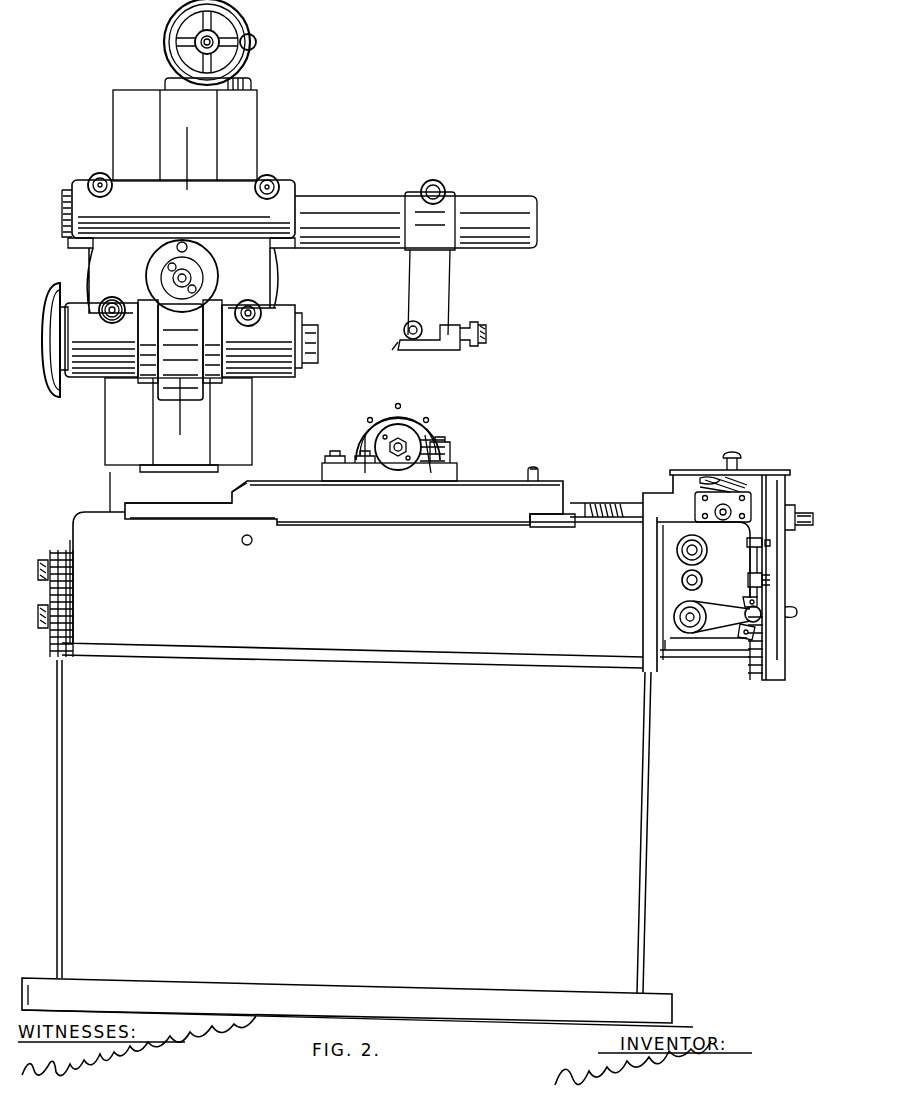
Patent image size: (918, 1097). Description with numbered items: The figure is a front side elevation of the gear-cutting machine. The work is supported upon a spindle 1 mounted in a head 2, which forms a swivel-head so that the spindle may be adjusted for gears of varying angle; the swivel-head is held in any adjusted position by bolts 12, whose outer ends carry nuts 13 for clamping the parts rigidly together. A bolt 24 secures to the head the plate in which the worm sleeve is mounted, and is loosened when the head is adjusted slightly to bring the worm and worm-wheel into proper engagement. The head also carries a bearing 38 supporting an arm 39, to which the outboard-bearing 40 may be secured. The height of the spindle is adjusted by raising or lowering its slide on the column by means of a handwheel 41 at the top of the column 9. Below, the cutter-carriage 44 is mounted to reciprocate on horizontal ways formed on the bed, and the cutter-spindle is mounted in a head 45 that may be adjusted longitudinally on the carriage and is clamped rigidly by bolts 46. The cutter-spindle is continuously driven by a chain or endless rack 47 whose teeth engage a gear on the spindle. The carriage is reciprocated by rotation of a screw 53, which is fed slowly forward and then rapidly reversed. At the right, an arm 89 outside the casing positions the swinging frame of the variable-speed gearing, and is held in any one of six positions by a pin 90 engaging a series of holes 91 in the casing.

The handwheel 41 is at (240, 22).
The column 9 is at (96, 130).
The bearing 38 is at (290, 198).
The arm 39 is at (365, 202).
The outboard-bearing 40 is at (440, 297).
The bolt 24 is at (187, 248).
The head 2 is at (272, 272).
The bolts 12 is at (107, 297).
The nuts 13 is at (119, 298).
The spindle 1 is at (308, 325).
The chain or endless rack 47 is at (438, 395).
The bolts 46 is at (334, 452).
The head 45 is at (460, 475).
The cutter-carriage 44 is at (490, 495).
The screw 53 is at (612, 502).
The arm 89 is at (716, 608).
The pin 90 is at (740, 630).
The holes 91 is at (757, 610).